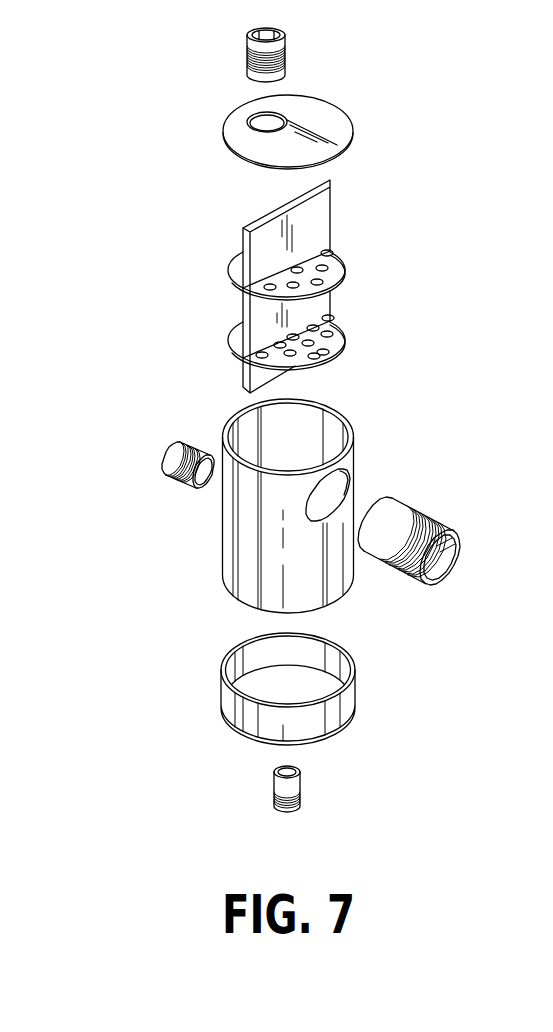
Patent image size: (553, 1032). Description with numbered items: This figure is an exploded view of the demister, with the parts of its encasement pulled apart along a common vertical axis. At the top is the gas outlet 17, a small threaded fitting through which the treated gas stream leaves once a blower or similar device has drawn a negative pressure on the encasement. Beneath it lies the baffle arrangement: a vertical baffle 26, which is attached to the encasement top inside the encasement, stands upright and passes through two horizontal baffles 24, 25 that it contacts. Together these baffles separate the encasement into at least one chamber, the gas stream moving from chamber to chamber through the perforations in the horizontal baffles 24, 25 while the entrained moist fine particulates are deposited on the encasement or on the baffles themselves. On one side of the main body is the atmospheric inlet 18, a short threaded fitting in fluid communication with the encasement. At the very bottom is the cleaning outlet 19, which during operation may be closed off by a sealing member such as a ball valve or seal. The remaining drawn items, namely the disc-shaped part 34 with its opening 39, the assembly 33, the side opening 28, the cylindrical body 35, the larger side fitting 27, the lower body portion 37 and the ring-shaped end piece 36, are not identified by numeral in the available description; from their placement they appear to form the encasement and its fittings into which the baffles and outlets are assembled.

The gas outlet 17 is at (287, 47).
The top plate 34 is at (289, 124).
The opening in top plate 39 is at (258, 122).
The baffle assembly 33 is at (272, 284).
The vertical baffle 26 is at (331, 204).
The horizontal baffle 24 is at (340, 262).
The horizontal baffle 25 is at (341, 335).
The atmospheric inlet 18 is at (165, 460).
The side opening 28 is at (333, 493).
The housing body 35 is at (298, 516).
The outlet fitting 27 is at (440, 556).
The lower end of housing 37 is at (229, 592).
The end cap 36 is at (355, 686).
The cleaning outlet 19 is at (286, 812).